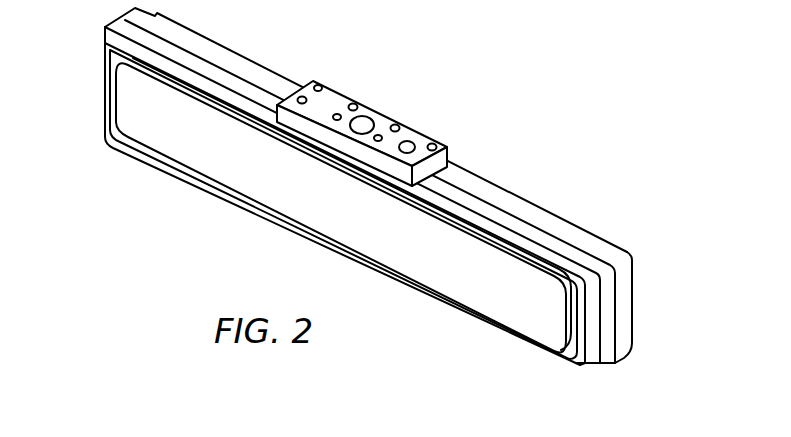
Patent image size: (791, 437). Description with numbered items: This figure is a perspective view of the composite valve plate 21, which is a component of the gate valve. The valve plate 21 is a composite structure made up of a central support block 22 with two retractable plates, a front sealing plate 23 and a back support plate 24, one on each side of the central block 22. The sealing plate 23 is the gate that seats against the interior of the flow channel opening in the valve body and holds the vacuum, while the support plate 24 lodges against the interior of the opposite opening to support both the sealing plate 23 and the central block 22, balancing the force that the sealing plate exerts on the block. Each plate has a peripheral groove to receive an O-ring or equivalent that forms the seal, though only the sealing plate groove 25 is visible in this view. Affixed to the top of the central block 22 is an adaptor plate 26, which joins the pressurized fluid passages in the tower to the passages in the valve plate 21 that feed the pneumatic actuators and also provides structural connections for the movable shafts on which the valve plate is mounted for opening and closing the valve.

The valve plate 21 is at (364, 210).
The central support block 22 is at (606, 381).
The sealing plate 23 is at (588, 363).
The support plate 24 is at (612, 238).
The sealing plate groove 25 is at (105, 55).
The adaptor plate 26 is at (348, 90).